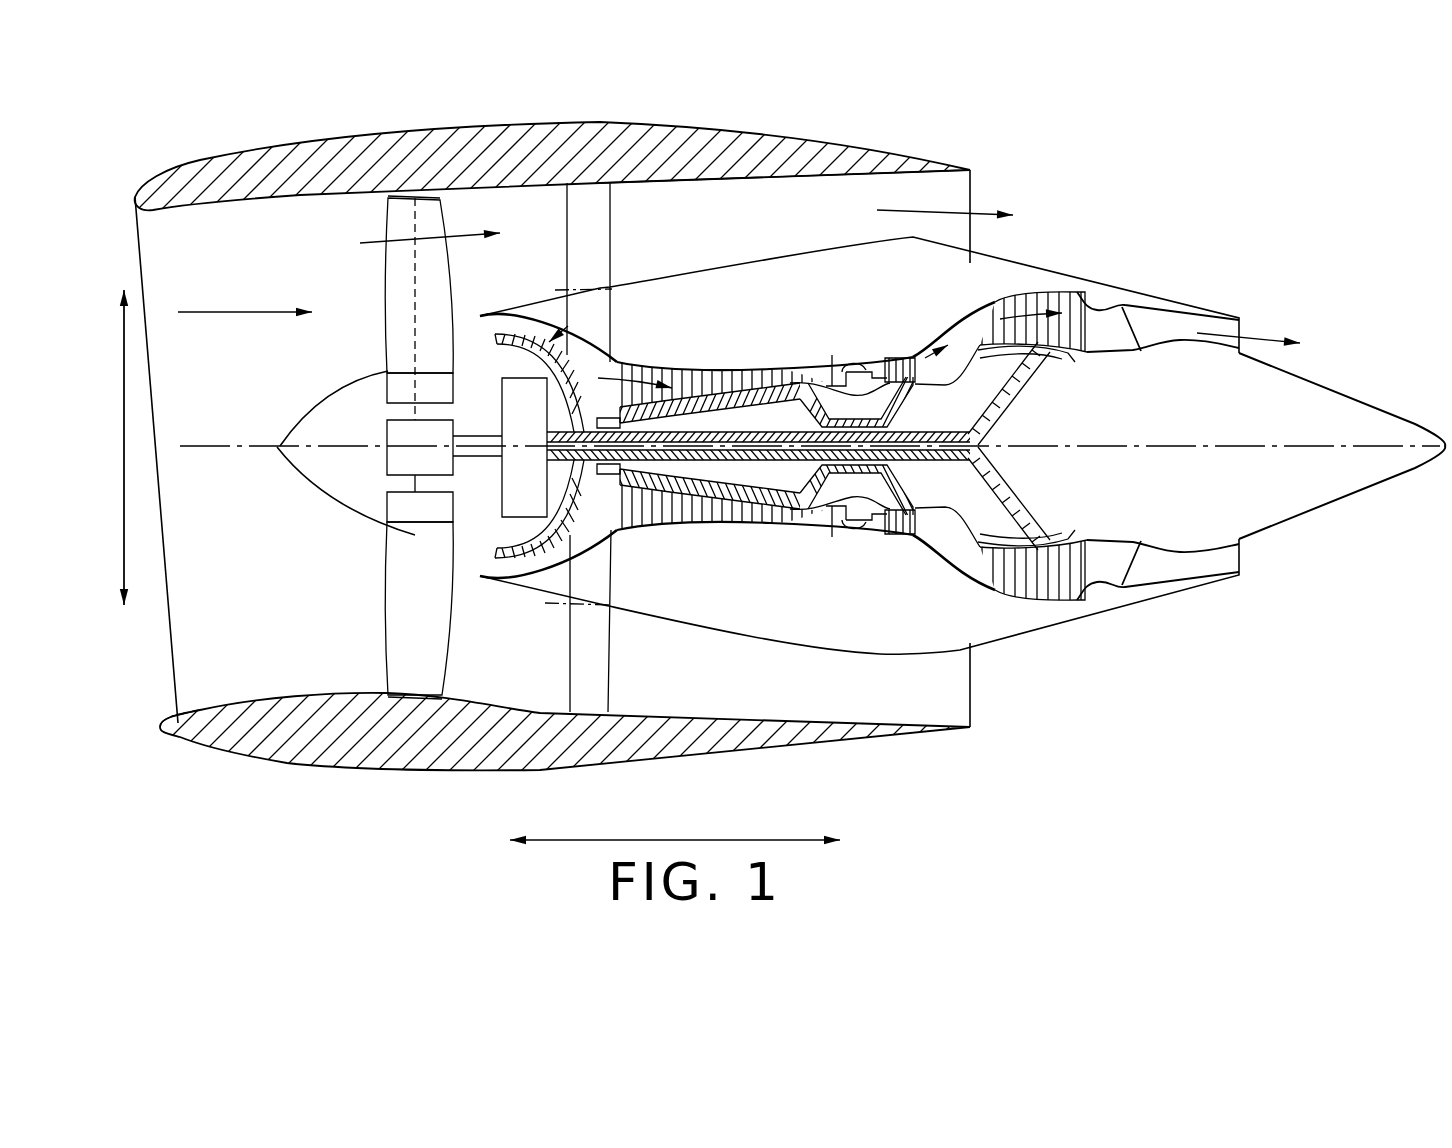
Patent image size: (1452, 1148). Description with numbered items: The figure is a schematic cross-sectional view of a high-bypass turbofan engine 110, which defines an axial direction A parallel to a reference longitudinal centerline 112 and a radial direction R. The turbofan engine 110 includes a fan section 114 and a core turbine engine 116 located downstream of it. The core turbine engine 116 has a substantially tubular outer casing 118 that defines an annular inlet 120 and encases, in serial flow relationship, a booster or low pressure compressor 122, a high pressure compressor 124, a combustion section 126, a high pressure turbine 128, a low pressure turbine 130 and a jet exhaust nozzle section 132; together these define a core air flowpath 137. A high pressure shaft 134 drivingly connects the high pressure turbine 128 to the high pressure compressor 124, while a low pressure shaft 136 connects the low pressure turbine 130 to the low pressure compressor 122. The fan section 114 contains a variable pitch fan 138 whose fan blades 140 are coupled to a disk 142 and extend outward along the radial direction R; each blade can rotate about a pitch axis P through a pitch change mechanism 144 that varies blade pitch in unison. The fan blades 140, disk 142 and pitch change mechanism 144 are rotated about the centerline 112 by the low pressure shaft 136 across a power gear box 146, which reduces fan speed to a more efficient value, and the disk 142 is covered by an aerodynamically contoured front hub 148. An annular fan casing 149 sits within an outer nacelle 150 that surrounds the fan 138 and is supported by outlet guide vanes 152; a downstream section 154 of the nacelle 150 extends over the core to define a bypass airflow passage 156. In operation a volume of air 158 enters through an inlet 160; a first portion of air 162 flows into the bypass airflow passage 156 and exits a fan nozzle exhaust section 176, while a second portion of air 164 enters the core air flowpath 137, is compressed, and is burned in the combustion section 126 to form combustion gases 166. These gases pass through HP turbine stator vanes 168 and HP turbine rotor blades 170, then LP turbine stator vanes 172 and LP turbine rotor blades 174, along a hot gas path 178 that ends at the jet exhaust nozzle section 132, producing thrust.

The turbofan engine 110 is at (1144, 156).
The longitudinal centerline 112 is at (1174, 440).
The fan section 114 is at (290, 240).
The core turbine engine 116 is at (795, 328).
The outer casing 118 is at (807, 637).
The annular inlet 120 is at (498, 573).
The low pressure compressor 122 is at (549, 589).
The high pressure compressor 124 is at (650, 525).
The combustion section 126 is at (852, 522).
The high pressure turbine 128 is at (924, 529).
The low pressure turbine 130 is at (1072, 600).
The jet exhaust nozzle section 132 is at (1139, 580).
The high pressure shaft 134 is at (883, 422).
The low pressure shaft 136 is at (948, 430).
The core air flowpath 137 is at (586, 543).
The variable pitch fan 138 is at (338, 503).
The fan blades 140 is at (385, 630).
The disk 142 is at (400, 387).
The pitch change mechanism 144 is at (387, 433).
The power gear box 146 is at (532, 393).
The front hub 148 is at (293, 463).
The fan casing 149 is at (405, 210).
The outer nacelle 150 is at (437, 770).
The outlet guide vanes 152 is at (610, 230).
The downstream section of nacelle 154 is at (857, 148).
The bypass airflow passage 156 is at (770, 222).
The volume of air 158 is at (240, 310).
The inlet 160 is at (167, 707).
The first portion of air 162 is at (928, 210).
The second portion of air 164 is at (471, 320).
The combustion gases 166 is at (1020, 313).
The HP turbine stator vanes 168 is at (877, 521).
The HP turbine rotor blades 170 is at (890, 510).
The LP turbine stator vanes 172 is at (988, 575).
The LP turbine rotor blades 174 is at (1008, 590).
The fan nozzle exhaust section 176 is at (973, 190).
The hot gas path 178 is at (955, 320).
The pitch axis P is at (420, 231).
The radial direction R is at (124, 420).
The axial direction A is at (677, 840).